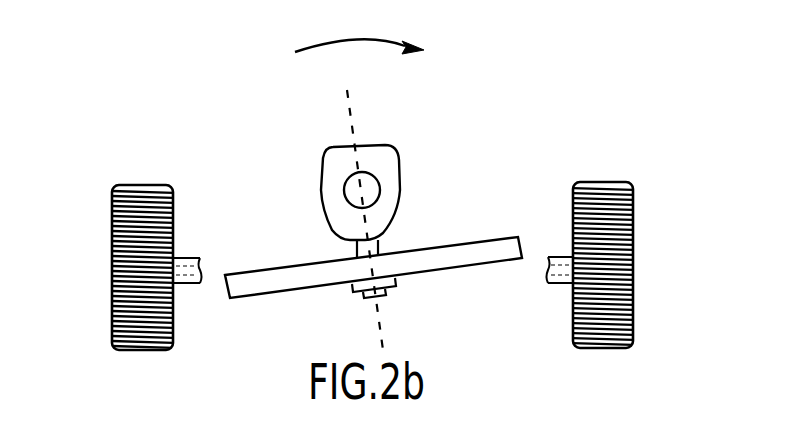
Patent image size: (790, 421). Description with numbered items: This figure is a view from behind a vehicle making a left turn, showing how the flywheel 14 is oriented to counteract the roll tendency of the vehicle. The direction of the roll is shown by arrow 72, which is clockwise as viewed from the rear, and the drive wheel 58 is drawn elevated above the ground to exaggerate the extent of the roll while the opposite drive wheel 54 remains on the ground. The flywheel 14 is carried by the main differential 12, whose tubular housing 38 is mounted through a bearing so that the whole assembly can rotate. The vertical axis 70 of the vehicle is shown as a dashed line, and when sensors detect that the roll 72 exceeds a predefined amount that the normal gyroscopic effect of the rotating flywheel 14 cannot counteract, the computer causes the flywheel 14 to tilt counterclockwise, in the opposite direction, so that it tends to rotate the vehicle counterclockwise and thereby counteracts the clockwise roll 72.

The main differential 12 is at (365, 147).
The flywheel 14 is at (443, 273).
The tubular housing 38 is at (378, 198).
The drive wheel 54 is at (633, 268).
The drive wheel 58 is at (112, 267).
The vertical axis 70 is at (352, 117).
The arrow 72 is at (365, 40).